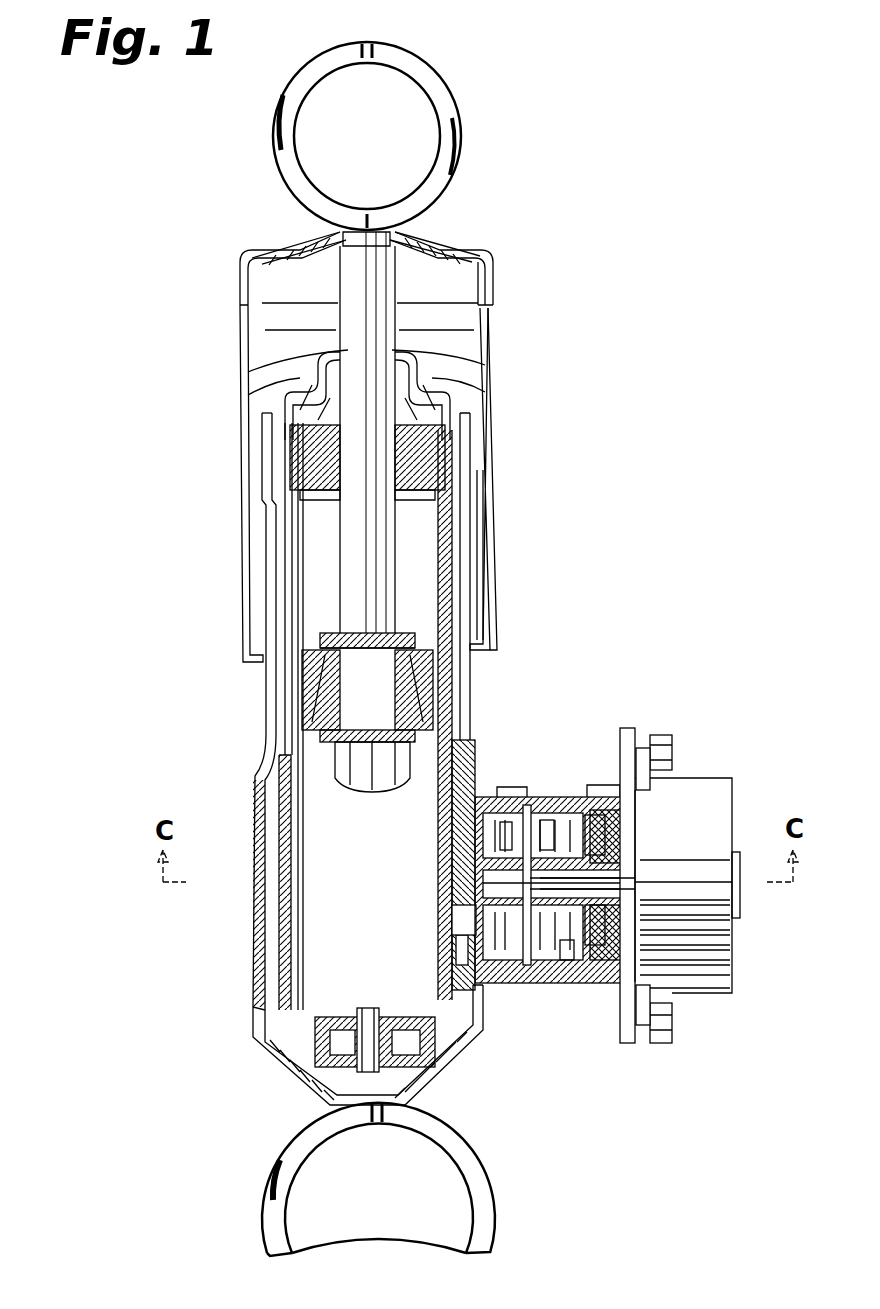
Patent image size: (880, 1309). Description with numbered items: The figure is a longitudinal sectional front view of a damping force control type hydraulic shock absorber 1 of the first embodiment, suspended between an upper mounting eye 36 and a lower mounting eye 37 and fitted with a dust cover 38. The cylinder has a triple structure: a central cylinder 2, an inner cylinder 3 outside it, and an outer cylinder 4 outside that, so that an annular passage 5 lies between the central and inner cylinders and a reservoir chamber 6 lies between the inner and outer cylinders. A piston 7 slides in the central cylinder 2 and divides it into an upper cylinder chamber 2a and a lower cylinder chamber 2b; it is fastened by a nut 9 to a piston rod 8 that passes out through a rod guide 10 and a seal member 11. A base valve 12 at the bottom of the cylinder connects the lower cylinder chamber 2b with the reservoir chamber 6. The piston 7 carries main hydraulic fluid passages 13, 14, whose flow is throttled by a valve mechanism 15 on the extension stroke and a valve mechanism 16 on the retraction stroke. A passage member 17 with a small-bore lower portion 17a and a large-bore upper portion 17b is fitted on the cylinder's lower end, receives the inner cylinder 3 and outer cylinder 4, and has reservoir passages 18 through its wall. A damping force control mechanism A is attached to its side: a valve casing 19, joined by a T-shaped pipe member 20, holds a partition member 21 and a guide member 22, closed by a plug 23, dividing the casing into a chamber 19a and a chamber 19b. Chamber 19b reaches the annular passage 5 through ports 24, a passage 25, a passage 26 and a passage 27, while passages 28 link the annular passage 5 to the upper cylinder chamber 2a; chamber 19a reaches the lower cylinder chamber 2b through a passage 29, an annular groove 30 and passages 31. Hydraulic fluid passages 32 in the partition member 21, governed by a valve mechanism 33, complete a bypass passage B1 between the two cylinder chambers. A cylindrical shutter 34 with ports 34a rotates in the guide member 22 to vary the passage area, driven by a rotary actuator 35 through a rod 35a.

The damping force control type hydraulic shock absorber 1 is at (600, 124).
The central cylinder 2 is at (452, 450).
The upper cylinder chamber 2a is at (315, 577).
The lower cylinder chamber 2b is at (305, 1015).
The inner cylinder 3 is at (470, 482).
The outer cylinder 4 is at (478, 512).
The annular passage 5 is at (488, 545).
The reservoir chamber 6 is at (278, 607).
The piston 7 is at (310, 700).
The piston rod 8 is at (352, 349).
The nut 9 is at (340, 778).
The rod guide 10 is at (455, 405).
The seal member 11 is at (432, 360).
The base valve 12 is at (315, 1070).
The main hydraulic fluid passage 13 is at (430, 640).
The main hydraulic fluid passage 14 is at (298, 718).
The valve mechanism 15 is at (455, 700).
The valve mechanism 16 is at (320, 645).
The passage member 17 is at (465, 800).
The lower portion 17a is at (285, 985).
The upper portion 17b is at (318, 865).
The reservoir passages 18 is at (262, 970).
The valve casing 19 is at (610, 1000).
The chamber 19a is at (585, 800).
The chamber 19b is at (632, 745).
The T-shaped pipe member 20 is at (258, 935).
The partition member 21 is at (567, 1000).
The guide member 22 is at (468, 1052).
The plug 23 is at (707, 1000).
The ports 24 is at (672, 740).
The passage 25 is at (520, 810).
The passage 26 is at (500, 815).
The passage 27 is at (470, 760).
The passages 28 is at (272, 497).
The passage 29 is at (505, 1000).
The annular groove 30 is at (445, 957).
The passages 31 is at (445, 950).
The hydraulic fluid passages 32 is at (590, 800).
The valve mechanism 33 is at (560, 800).
The shutter 34 is at (735, 935).
The ports 34a is at (680, 778).
The rotary actuator 35 is at (738, 945).
The rod 35a is at (625, 860).
The mounting eye 36 is at (437, 88).
The mounting eye 37 is at (480, 1183).
The dust cover 38 is at (495, 292).
The damping force control mechanism A is at (657, 1047).
The bypass passage B1 is at (594, 573).